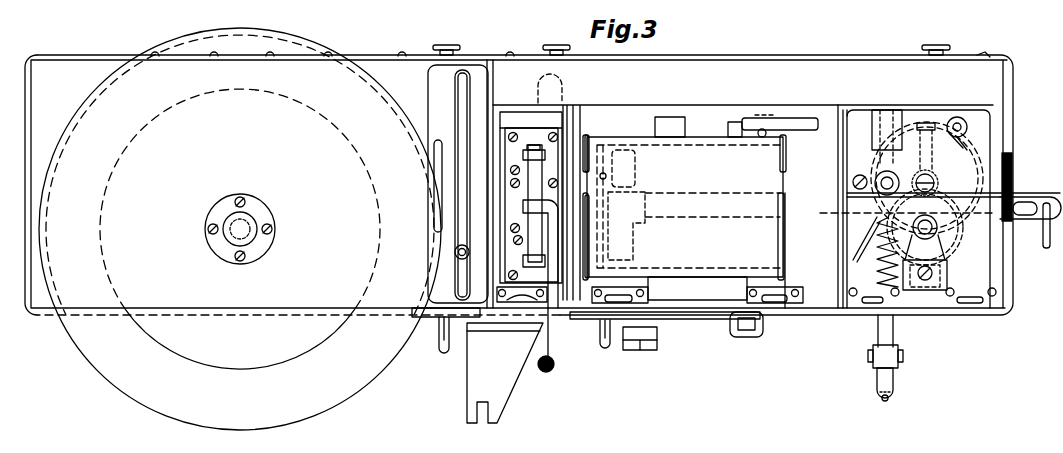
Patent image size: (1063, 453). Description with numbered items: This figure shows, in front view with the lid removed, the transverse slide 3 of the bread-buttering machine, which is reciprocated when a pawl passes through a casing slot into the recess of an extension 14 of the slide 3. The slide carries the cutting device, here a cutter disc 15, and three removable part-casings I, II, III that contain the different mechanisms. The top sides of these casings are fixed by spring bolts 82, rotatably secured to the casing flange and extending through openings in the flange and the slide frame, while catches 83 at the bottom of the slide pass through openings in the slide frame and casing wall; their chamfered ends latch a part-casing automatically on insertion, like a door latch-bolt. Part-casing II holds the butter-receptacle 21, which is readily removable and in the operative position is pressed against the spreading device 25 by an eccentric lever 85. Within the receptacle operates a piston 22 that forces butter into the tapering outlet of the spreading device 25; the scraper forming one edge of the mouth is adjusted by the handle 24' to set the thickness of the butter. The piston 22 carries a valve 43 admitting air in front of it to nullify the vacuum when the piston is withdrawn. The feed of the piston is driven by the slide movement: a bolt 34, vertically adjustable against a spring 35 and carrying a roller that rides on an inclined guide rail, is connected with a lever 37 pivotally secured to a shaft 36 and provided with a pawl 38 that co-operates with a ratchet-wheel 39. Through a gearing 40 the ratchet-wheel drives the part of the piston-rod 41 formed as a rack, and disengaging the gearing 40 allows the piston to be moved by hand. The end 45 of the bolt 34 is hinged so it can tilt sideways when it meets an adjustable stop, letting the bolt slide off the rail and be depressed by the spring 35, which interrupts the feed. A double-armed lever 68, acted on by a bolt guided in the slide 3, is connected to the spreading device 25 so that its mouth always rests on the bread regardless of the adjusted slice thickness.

The transverse slide 3 is at (48, 312).
The cutter disc 15 is at (337, 402).
The extension of the slide 14 is at (503, 398).
The handle 24' is at (566, 342).
The catches 83 is at (442, 340).
The double-armed lever 68 is at (553, 278).
The spring bolts 82 is at (540, 47).
The spreading device 25 is at (532, 135).
The part-casing I is at (547, 195).
The part-casing II is at (800, 180).
The part-casing III is at (940, 209).
The butter-receptacle 21 is at (717, 268).
The piston 22 is at (636, 165).
The valve 43 is at (606, 180).
The eccentric lever 85 is at (777, 132).
The pawl 38 is at (858, 168).
The piston-rod 41 is at (817, 205).
The lever 37 is at (903, 178).
The shaft 36 is at (938, 183).
The ratchet-wheel 39 is at (960, 158).
The gearing 40 is at (936, 232).
The spring 35 is at (877, 278).
The bolt 34 is at (884, 327).
The end of the bolt 45 is at (894, 377).